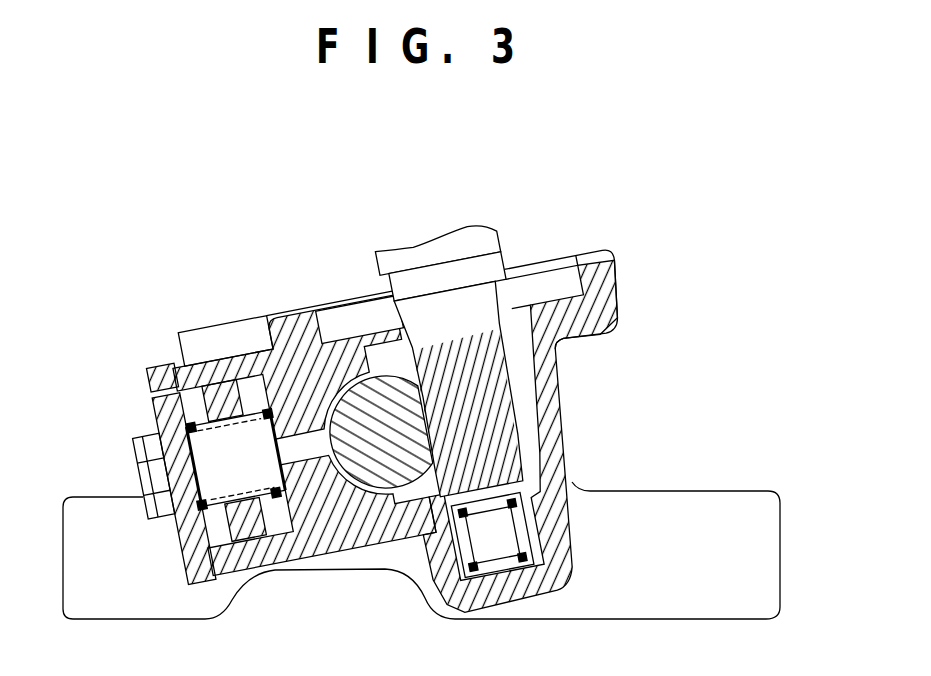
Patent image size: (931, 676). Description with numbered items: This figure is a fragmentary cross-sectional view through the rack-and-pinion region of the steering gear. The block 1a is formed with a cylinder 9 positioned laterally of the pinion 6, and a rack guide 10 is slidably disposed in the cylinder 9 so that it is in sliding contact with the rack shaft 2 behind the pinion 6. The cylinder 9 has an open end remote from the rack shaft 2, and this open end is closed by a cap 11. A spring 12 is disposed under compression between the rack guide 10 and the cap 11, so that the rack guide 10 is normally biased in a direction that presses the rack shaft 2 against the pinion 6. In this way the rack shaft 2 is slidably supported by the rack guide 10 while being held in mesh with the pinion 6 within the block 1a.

The block 1a is at (553, 456).
The rack shaft 2 is at (387, 512).
The pinion 6 is at (515, 417).
The cylinder 9 is at (289, 525).
The rack guide 10 is at (278, 355).
The cap 11 is at (153, 433).
The spring 12 is at (173, 372).